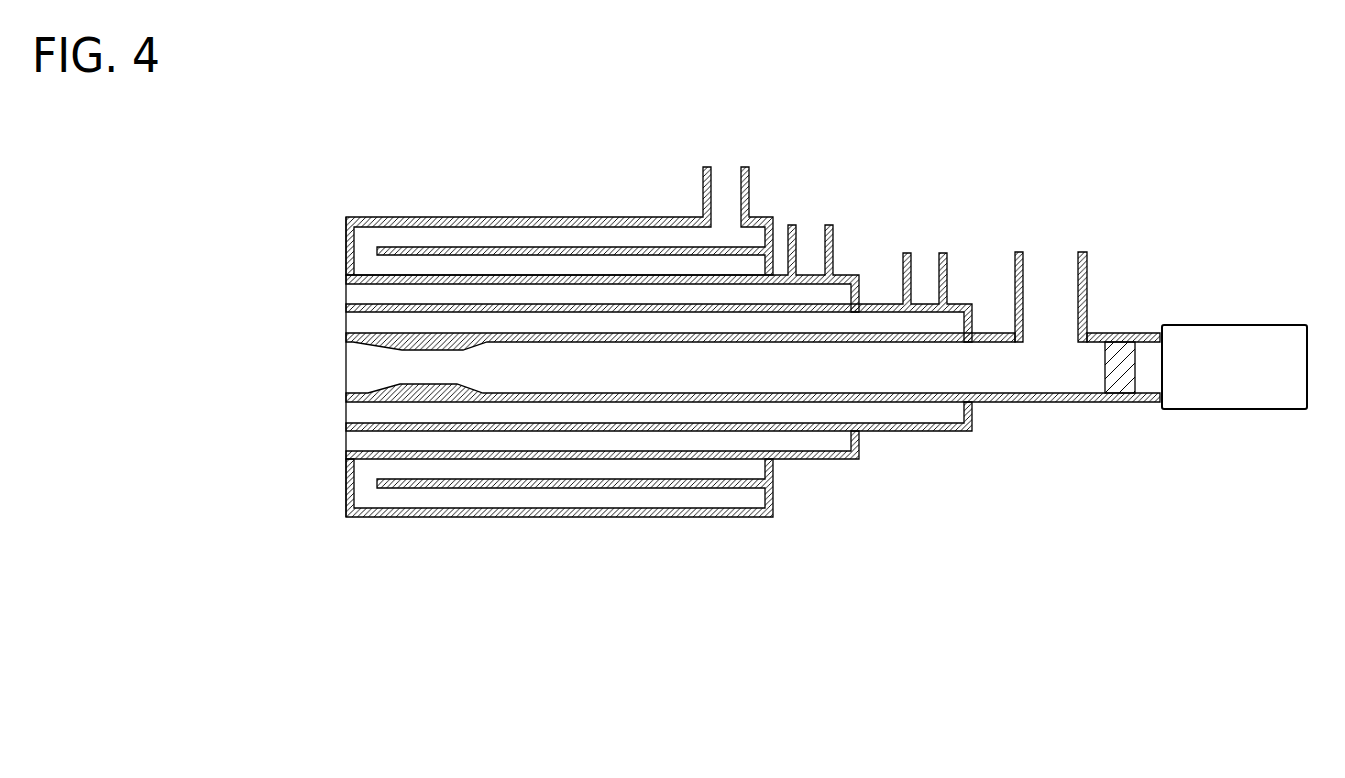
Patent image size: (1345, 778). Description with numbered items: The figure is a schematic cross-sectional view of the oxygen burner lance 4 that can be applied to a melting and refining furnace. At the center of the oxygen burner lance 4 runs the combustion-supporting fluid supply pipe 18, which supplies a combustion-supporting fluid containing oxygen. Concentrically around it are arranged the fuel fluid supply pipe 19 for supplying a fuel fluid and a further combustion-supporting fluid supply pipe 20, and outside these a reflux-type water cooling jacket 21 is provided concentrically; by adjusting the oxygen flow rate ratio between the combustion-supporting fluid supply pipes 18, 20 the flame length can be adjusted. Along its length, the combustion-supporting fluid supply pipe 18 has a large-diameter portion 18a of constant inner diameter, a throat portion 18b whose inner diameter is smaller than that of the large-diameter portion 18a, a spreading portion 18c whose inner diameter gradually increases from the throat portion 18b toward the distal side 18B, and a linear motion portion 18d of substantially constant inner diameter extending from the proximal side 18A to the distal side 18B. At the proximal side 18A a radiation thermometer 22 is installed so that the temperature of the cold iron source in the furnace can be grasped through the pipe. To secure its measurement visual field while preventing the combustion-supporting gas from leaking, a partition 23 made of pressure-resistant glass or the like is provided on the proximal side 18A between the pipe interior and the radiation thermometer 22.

The oxygen burner lance 4 is at (283, 55).
The combustion-supporting fluid supply pipe 18 is at (660, 414).
The proximal side 18A is at (1113, 307).
The distal side 18B is at (340, 342).
The large-diameter portion 18a is at (985, 394).
The throat portion 18b is at (436, 384).
The spreading portion 18c is at (381, 393).
The linear motion portion 18d is at (357, 397).
The fuel fluid supply pipe 19 is at (340, 322).
The combustion-supporting fluid supply pipe 20 is at (340, 291).
The reflux-type water cooling jacket 21 is at (405, 200).
The radiation thermometer 22 is at (1250, 337).
The partition 23 is at (1126, 417).